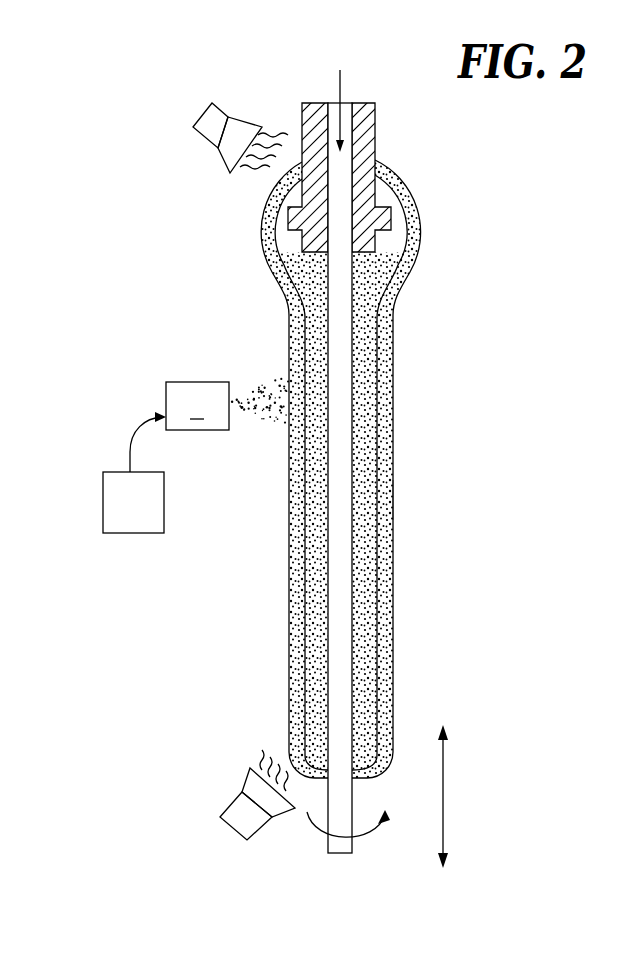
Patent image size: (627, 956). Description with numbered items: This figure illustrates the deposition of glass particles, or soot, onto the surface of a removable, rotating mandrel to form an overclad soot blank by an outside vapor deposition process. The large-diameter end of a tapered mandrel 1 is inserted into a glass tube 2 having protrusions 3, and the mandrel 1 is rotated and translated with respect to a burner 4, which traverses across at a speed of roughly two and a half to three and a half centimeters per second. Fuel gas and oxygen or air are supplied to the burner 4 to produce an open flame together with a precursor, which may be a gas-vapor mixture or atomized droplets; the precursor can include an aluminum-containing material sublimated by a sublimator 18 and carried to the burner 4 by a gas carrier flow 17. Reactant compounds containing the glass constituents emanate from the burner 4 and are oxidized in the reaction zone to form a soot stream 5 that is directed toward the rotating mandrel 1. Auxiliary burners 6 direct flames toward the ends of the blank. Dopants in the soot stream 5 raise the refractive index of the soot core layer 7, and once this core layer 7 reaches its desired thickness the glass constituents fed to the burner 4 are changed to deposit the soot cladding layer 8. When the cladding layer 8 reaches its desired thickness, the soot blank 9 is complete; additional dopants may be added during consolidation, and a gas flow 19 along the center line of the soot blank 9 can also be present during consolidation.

The tapered mandrel 1 is at (340, 625).
The glass tube 2 is at (377, 130).
The protrusions 3 is at (262, 208).
The burner 4 is at (197, 406).
The soot stream 5 is at (257, 434).
The auxiliary burners 6 is at (232, 113).
The soot core layer 7 is at (300, 548).
The soot cladding layer 8 is at (296, 681).
The soot blank 9 is at (400, 500).
The gas carrier flow 17 is at (125, 444).
The sublimator 18 is at (133, 502).
The gas flow 19 is at (340, 92).